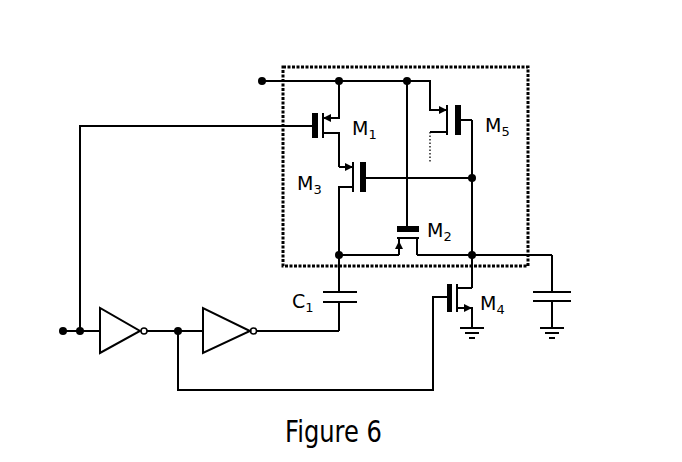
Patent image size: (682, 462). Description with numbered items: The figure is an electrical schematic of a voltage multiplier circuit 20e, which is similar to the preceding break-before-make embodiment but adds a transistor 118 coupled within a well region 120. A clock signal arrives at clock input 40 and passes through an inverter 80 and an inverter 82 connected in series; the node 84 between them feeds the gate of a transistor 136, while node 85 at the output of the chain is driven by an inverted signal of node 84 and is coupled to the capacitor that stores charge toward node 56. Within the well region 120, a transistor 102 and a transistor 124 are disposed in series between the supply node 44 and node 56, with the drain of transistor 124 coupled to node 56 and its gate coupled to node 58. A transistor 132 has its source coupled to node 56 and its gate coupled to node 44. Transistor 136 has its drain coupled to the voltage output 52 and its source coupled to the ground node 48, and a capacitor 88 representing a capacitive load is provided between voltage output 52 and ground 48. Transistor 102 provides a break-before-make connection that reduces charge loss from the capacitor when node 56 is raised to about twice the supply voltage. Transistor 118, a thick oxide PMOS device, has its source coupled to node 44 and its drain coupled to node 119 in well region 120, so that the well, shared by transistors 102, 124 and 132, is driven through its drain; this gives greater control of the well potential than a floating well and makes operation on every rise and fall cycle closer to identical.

The voltage multiplier circuit 20e is at (556, 36).
The clock input 40 is at (70, 327).
The node 44 is at (280, 78).
The ground node 48 is at (478, 326).
The voltage output 52 is at (537, 255).
The node 56 is at (384, 257).
The node 58 is at (473, 211).
The inverter 80 is at (122, 341).
The inverter 82 is at (230, 341).
The node 84 is at (165, 325).
The node 85 is at (298, 332).
The capacitor 88 is at (553, 292).
The transistor 102 is at (312, 120).
The transistor 118 is at (461, 114).
The node 119 is at (433, 148).
The well region 120 is at (432, 68).
The transistor 124 is at (366, 186).
The transistor 132 is at (413, 228).
The transistor 136 is at (455, 312).